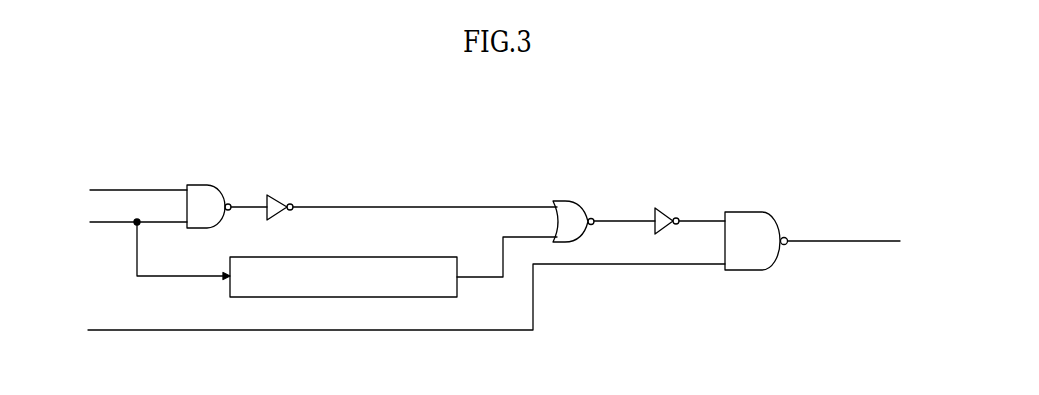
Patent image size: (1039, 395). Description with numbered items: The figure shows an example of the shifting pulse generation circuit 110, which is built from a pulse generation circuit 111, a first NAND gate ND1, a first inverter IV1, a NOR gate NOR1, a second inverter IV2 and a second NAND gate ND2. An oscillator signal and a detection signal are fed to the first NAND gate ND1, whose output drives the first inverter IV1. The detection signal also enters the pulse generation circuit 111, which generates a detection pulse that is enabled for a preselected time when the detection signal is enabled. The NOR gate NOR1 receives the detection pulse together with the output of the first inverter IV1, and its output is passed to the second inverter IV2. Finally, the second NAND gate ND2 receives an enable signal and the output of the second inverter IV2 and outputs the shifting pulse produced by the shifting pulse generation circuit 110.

The shifting pulse generation circuit 110 is at (1012, 128).
The pulse generation circuit 111 is at (421, 256).
The first NAND gate ND1 is at (209, 185).
The first inverter IV1 is at (279, 197).
The NOR gate NOR1 is at (584, 210).
The second inverter IV2 is at (663, 210).
The second NAND gate ND2 is at (753, 212).